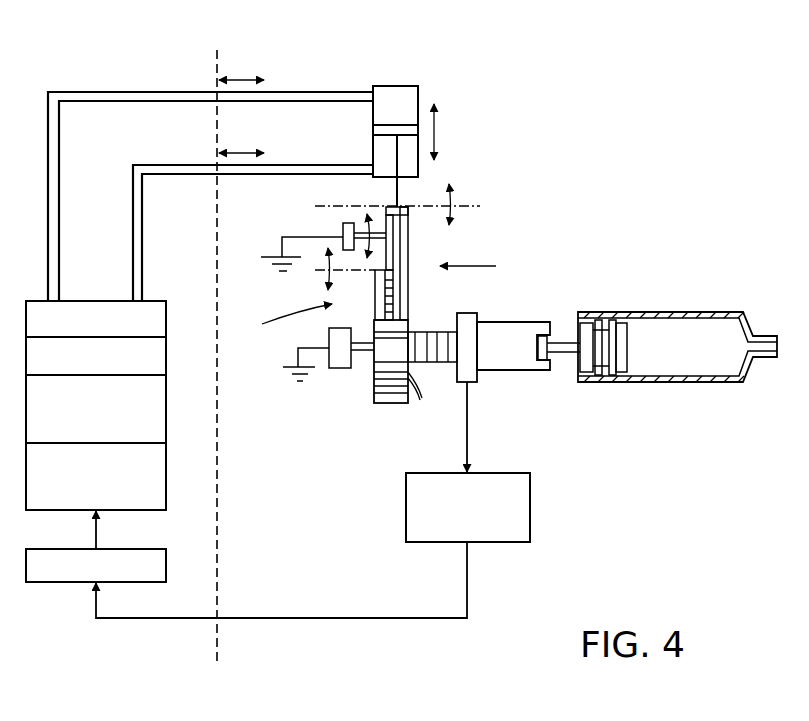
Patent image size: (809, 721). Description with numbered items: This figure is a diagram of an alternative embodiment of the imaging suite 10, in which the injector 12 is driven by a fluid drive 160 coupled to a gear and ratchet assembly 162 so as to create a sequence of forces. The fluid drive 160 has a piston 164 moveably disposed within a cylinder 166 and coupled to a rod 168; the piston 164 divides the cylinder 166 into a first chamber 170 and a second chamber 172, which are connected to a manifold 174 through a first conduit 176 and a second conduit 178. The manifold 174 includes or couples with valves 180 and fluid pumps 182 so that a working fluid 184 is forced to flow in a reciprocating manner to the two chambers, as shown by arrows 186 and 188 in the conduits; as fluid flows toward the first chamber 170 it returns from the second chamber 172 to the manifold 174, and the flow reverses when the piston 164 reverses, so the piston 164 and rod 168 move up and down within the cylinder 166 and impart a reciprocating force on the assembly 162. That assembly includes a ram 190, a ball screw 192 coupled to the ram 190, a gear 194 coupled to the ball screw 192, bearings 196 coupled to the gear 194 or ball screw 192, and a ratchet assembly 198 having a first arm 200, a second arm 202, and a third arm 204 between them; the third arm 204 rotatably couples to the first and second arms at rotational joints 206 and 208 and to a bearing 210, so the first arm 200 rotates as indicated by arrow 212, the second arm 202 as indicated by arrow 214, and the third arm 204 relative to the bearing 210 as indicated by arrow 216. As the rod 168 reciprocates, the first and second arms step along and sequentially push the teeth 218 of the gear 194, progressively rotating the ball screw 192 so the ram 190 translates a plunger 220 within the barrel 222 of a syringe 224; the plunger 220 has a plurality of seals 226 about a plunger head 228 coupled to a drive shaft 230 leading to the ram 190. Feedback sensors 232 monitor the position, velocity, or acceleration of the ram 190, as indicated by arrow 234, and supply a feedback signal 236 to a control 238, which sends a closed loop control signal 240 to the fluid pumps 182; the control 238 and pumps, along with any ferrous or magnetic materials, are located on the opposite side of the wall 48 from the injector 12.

The imaging suite 10 is at (180, 665).
The injector 12 is at (532, 246).
The wall 48 is at (218, 645).
The fluid drive 160 is at (436, 101).
The gear and ratchet assembly 162 is at (487, 268).
The piston 164 is at (373, 128).
The cylinder 166 is at (420, 92).
The rod 168 is at (397, 152).
The first chamber 170 is at (403, 89).
The second chamber 172 is at (378, 152).
The manifold 174 is at (167, 318).
The first conduit 176 is at (146, 91).
The second conduit 178 is at (162, 176).
The valves 180 is at (167, 358).
The fluid pumps 182 is at (167, 417).
The working fluid 184 is at (167, 480).
The arrow 186 is at (243, 80).
The arrow 188 is at (243, 152).
The ram 190 is at (516, 322).
The ball screw 192 is at (436, 363).
The gear 194 is at (372, 404).
The bearings 196 is at (331, 368).
The ratchet assembly 198 is at (277, 322).
The first arm 200 is at (410, 317).
The second arm 202 is at (360, 306).
The third arm 204 is at (393, 252).
The rotational joint 206 is at (402, 206).
The rotational joint 208 is at (404, 278).
The bearing 210 is at (344, 232).
The arrow 212 is at (452, 207).
The arrow 214 is at (320, 272).
The arrow 216 is at (368, 218).
The teeth 218 is at (406, 395).
The plunger 220 is at (629, 354).
The barrel 222 is at (668, 382).
The syringe 224 is at (677, 337).
The seals 226 is at (613, 376).
The plunger head 228 is at (622, 346).
The drive shaft 230 is at (558, 356).
The feedback sensors 232 is at (531, 504).
The arrow 234 is at (469, 422).
The feedback signal 236 is at (370, 620).
The control 238 is at (185, 556).
The closed loop control signal 240 is at (95, 535).